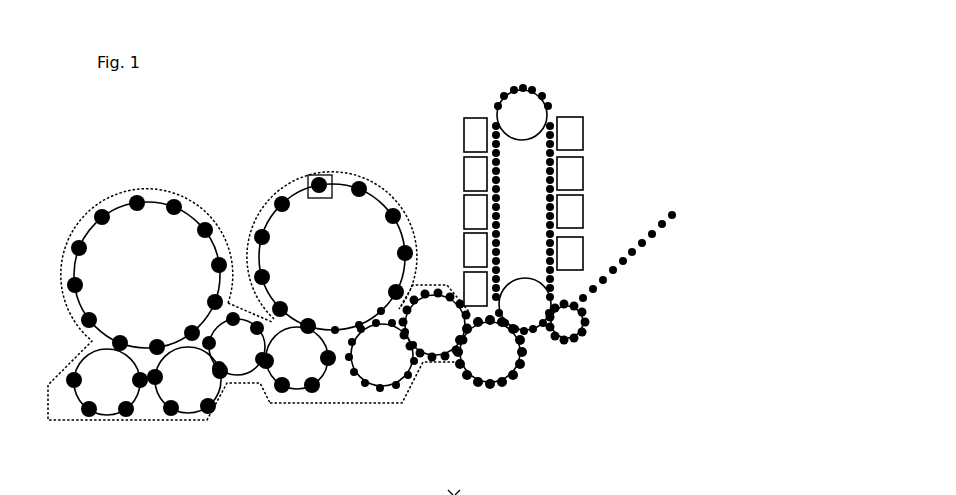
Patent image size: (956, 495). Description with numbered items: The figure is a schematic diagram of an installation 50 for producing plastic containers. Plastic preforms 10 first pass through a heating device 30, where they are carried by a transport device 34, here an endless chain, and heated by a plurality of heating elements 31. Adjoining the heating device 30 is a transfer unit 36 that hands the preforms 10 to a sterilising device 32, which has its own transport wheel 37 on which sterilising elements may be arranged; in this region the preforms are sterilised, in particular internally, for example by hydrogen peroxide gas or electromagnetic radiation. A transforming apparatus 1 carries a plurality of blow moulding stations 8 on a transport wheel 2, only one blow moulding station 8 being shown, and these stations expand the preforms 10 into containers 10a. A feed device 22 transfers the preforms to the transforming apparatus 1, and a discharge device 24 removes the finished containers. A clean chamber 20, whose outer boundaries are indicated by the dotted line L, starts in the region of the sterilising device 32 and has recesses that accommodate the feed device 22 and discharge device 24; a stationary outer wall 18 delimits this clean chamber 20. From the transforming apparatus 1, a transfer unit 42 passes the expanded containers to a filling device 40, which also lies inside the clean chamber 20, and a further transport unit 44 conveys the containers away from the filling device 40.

The transforming apparatus 1 is at (314, 147).
The transport wheel 2 is at (372, 240).
The blow moulding station 8 is at (328, 176).
The plastic preform 10 is at (592, 298).
The container 10a is at (323, 387).
The dotted line L is at (342, 403).
The wall 18 is at (373, 180).
The clean chamber 20 is at (272, 174).
The feed device 22 is at (400, 370).
The discharge device 24 is at (297, 385).
The heating device 30 is at (480, 84).
The heating element 31 is at (473, 137).
The sterilising device 32 is at (432, 262).
The transport device 34 is at (525, 107).
The transfer unit 36 is at (483, 363).
The transport wheel 37 is at (433, 340).
The filling device 40 is at (118, 225).
The transfer unit 42 is at (222, 378).
The transport unit 44 is at (93, 387).
The installation 50 is at (258, 89).